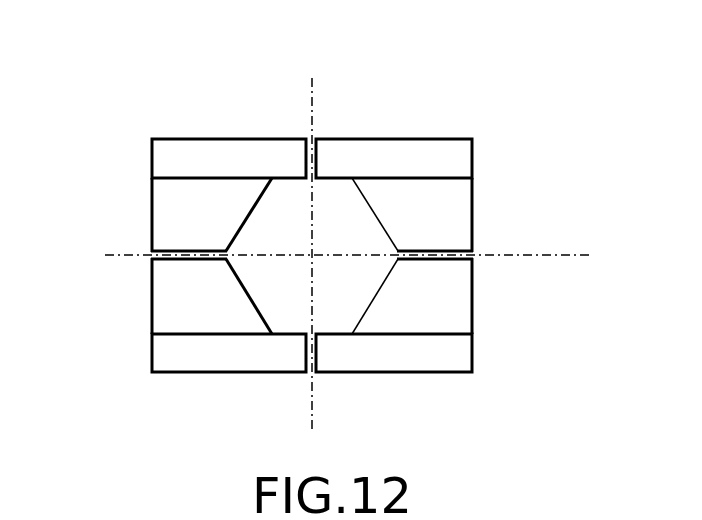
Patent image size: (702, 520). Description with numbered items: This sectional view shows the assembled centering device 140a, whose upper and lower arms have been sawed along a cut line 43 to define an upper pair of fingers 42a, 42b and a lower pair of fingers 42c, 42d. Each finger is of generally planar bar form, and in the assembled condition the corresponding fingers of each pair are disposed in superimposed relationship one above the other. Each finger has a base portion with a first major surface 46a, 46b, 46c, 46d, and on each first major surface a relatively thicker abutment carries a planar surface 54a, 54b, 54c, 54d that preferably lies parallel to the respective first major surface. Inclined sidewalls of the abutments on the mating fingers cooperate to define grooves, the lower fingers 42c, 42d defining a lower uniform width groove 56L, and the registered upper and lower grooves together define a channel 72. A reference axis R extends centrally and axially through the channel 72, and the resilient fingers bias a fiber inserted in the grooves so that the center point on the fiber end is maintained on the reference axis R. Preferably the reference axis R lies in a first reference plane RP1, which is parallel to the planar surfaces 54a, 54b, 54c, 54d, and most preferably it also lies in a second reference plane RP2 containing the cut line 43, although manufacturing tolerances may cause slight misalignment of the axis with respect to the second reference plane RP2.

The centering device 140a is at (208, 74).
The cut line 43 is at (309, 239).
The second reference plane RP2 is at (313, 100).
The first reference plane RP1 is at (546, 255).
The finger 42a is at (170, 157).
The finger 42b is at (448, 157).
The finger 42c is at (450, 352).
The finger 42d is at (170, 353).
The first major surface 46a is at (180, 180).
The first major surface 46b is at (440, 182).
The first major surface 46c is at (445, 333).
The first major surface 46d is at (185, 333).
The planar surface 54a is at (185, 250).
The planar surface 54b is at (450, 250).
The planar surface 54c is at (450, 262).
The planar surface 54d is at (180, 262).
The channel 72 is at (337, 215).
The lower uniform width groove 56L is at (297, 308).
The reference axis R is at (312, 258).